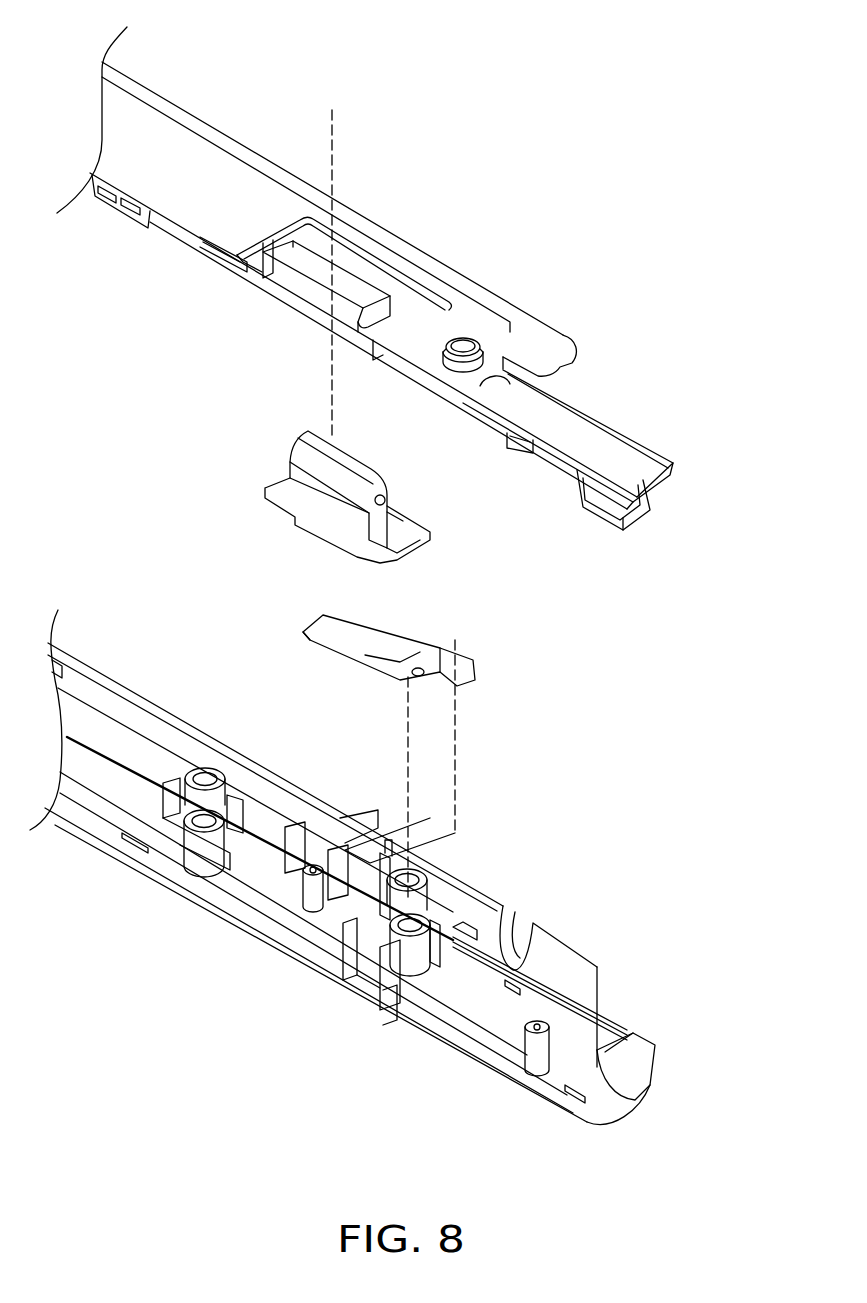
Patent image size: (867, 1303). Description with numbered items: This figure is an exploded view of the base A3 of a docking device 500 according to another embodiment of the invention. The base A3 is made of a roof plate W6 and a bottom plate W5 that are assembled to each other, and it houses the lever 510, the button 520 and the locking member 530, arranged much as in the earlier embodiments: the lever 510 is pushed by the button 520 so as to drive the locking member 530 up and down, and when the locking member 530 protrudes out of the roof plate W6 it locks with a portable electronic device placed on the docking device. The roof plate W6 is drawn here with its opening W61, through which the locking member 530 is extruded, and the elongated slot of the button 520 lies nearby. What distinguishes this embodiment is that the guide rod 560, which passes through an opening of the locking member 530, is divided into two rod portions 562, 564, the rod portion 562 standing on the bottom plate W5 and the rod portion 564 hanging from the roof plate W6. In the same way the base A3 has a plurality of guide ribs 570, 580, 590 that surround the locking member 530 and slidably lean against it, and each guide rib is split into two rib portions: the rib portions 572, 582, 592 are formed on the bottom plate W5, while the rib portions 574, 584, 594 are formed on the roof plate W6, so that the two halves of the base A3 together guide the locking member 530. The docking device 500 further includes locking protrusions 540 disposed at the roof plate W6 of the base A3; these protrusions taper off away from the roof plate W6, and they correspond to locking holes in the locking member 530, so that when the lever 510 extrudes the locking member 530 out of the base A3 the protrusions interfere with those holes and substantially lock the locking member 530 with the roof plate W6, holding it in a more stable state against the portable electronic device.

The docking device 500 is at (697, 430).
The base A3 is at (715, 33).
The bottom plate W5 is at (652, 1055).
The roof plate W6 is at (655, 492).
The slot opening of upper housing half W61 is at (352, 288).
The lever 510 is at (505, 667).
The button 520 is at (468, 345).
The locking member 530 is at (283, 488).
The locking protrusions 540 is at (721, 173).
The guide rod 560 is at (757, 174).
The rod portion 562 is at (312, 888).
The rod portion 564 is at (780, 225).
The guide rib 570 is at (757, 243).
The rib portion 572 is at (265, 870).
The rib portion 574 is at (780, 296).
The guide rib 580 is at (757, 316).
The rib portion 582 is at (342, 868).
The rib portion 584 is at (780, 369).
The guide rib 590 is at (757, 389).
The rib portion 592 is at (398, 972).
The rib portion 594 is at (780, 441).